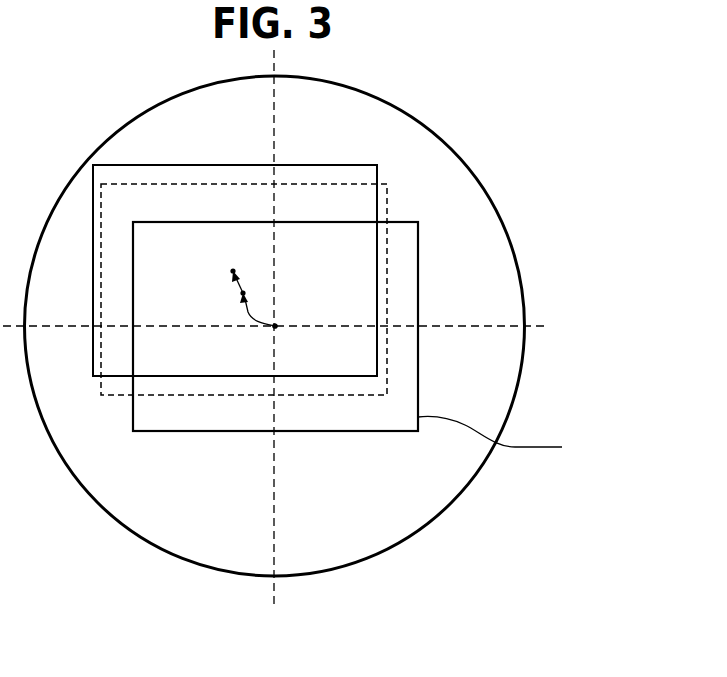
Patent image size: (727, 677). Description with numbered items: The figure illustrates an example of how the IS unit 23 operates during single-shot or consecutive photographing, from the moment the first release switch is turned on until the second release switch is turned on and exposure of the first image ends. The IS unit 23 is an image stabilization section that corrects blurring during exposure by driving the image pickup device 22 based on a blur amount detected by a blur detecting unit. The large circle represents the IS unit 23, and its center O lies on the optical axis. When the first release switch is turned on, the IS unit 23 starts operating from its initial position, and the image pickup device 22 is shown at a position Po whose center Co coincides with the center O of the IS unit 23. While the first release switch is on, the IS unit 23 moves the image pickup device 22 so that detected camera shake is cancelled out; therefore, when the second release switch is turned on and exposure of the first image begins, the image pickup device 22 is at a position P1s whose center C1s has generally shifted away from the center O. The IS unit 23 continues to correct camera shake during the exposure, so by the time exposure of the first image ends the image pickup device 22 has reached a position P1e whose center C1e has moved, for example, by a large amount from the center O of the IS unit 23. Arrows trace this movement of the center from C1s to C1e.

The IS unit 23 is at (353, 88).
The image pickup device 22 is at (504, 439).
The position P1e is at (323, 166).
The position P1s is at (387, 190).
The position Po is at (418, 233).
The center O of the IS unit O is at (265, 340).
The center Co of the image pickup device Co is at (278, 328).
The center C1s of the image pickup device C1s is at (243, 293).
The center C1e of the image pickup device C1e is at (233, 271).